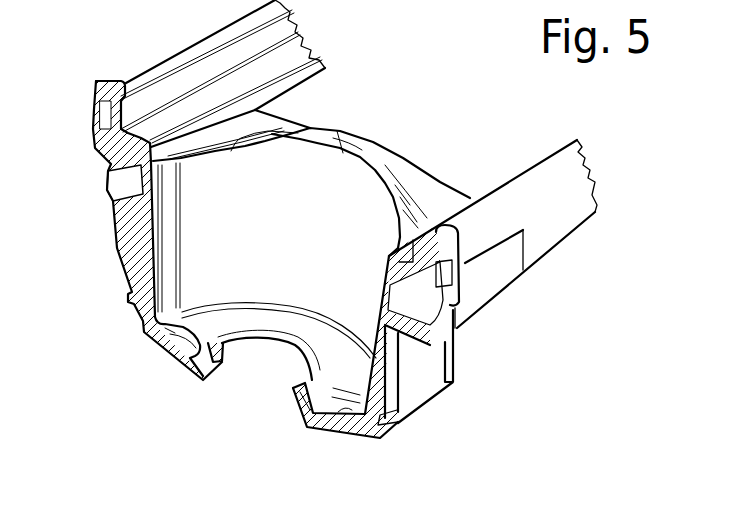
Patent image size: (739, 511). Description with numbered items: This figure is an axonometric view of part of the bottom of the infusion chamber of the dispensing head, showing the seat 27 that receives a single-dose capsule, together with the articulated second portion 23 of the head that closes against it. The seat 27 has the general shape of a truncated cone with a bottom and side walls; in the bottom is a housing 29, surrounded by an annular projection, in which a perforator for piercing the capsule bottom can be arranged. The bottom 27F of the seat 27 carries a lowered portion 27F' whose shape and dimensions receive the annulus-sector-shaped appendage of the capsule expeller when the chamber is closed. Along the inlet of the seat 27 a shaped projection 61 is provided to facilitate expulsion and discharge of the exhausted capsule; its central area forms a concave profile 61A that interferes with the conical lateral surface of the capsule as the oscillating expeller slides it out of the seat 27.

The second portion 23 is at (510, 372).
The seat 27 is at (320, 263).
The bottom of the seat 27F is at (279, 306).
The lowered portion 27F' is at (178, 383).
The housing 29 is at (256, 355).
The shaped projection 61 is at (308, 128).
The concave profile 61A is at (340, 138).